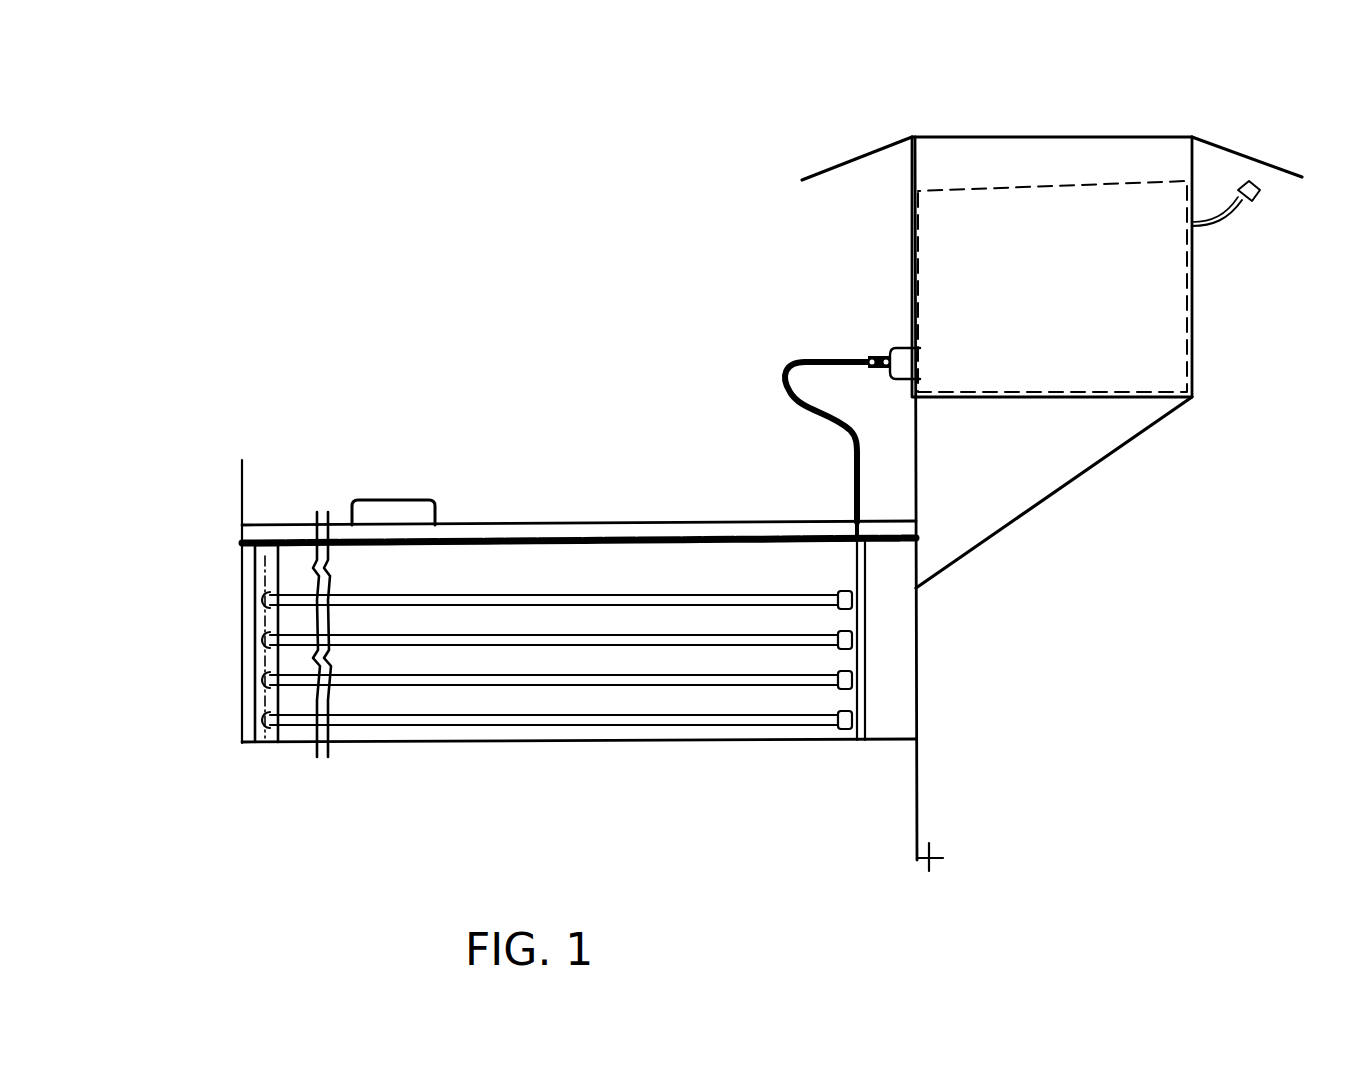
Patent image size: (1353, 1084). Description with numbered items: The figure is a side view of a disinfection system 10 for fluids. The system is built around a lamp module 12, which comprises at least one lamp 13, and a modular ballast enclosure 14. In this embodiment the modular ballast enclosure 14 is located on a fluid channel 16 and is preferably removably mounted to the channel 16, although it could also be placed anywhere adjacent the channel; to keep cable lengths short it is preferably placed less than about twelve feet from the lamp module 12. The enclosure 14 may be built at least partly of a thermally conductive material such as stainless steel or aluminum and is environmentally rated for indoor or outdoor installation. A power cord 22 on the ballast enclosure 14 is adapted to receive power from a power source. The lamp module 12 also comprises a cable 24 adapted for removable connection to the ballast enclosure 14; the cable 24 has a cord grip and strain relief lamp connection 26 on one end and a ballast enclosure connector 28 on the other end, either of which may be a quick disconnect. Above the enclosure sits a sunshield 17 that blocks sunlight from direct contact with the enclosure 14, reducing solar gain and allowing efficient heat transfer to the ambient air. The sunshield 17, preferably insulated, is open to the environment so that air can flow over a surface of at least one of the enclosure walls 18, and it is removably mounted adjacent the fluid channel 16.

The disinfection system 10 is at (326, 367).
The lamp module 12 is at (598, 522).
The lamp 13 is at (297, 598).
The modular ballast enclosure 14 is at (1192, 306).
The fluid channel 16 is at (916, 657).
The sunshield 17 is at (846, 158).
The enclosure walls 18 is at (1088, 398).
The power cord 22 is at (1253, 218).
The cable 24 is at (786, 366).
The cord grip and strain relief lamp connection 26 is at (853, 487).
The ballast enclosure connector 28 is at (870, 357).